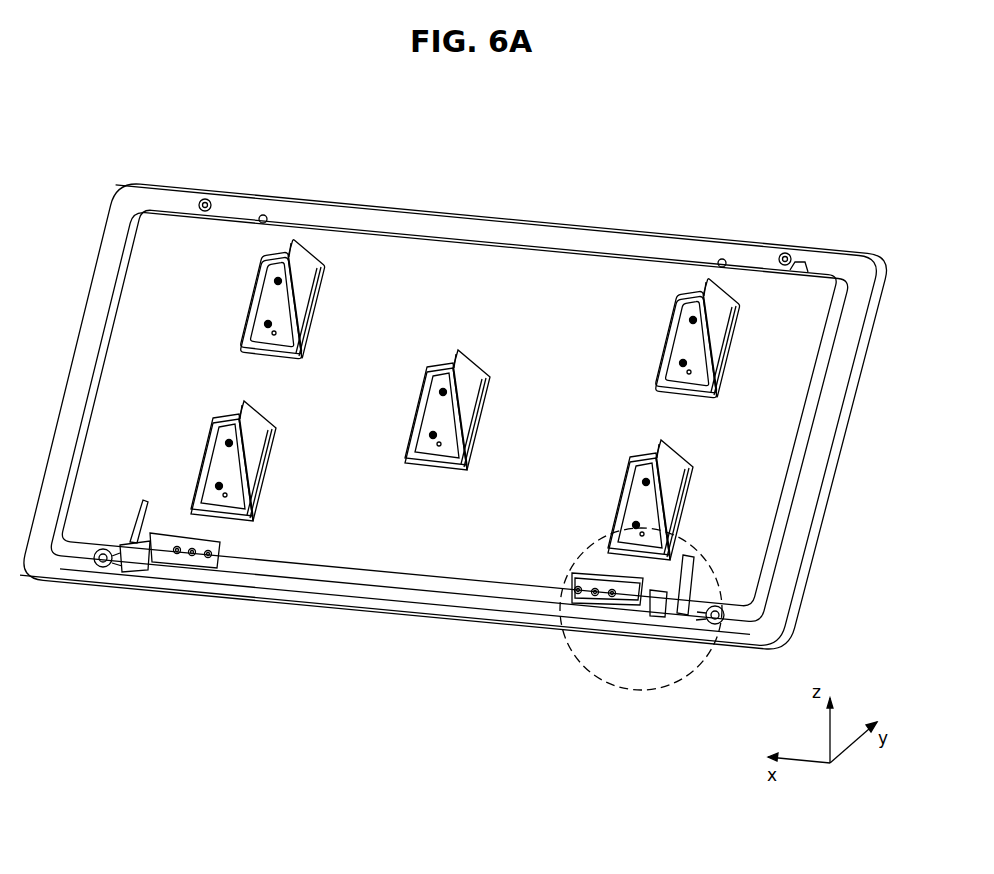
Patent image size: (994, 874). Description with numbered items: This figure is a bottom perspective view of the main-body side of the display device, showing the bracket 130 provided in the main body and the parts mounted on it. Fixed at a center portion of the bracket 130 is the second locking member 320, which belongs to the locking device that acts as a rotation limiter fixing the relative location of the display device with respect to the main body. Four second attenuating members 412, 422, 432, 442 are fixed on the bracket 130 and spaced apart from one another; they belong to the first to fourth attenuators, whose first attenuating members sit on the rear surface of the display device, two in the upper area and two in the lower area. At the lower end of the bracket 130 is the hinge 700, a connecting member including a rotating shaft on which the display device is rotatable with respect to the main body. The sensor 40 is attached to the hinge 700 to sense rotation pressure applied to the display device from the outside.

The bracket 130 is at (878, 312).
The second attenuating member 412 is at (301, 249).
The second attenuating member 422 is at (247, 407).
The second attenuating member 432 is at (714, 287).
The second attenuating member 442 is at (670, 460).
The second locking member 320 is at (480, 357).
The sensor 40 is at (663, 606).
The hinge 700 is at (686, 622).